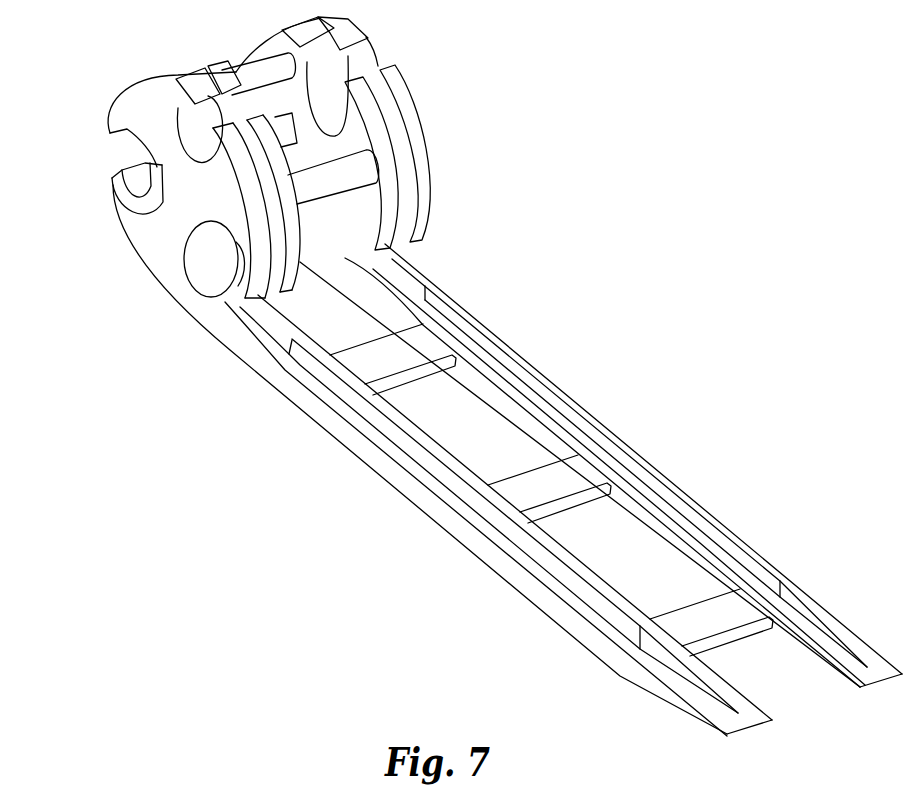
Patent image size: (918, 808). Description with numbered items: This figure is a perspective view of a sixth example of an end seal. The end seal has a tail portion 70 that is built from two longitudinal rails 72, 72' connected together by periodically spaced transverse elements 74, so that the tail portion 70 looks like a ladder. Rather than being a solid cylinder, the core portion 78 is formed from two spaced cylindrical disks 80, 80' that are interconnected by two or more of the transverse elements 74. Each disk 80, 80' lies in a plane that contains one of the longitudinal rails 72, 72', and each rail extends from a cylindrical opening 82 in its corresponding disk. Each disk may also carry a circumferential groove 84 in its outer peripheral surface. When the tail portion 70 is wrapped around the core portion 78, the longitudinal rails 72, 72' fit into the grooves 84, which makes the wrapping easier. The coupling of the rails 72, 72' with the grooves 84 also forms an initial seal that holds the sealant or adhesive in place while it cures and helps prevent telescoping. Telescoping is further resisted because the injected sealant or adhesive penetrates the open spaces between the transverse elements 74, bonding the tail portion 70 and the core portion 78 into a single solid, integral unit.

The tail portion 70 is at (386, 547).
The longitudinal rail 72 is at (442, 460).
The longitudinal rail 72' is at (601, 465).
The transverse element 74 is at (413, 370).
The core portion 78 is at (90, 316).
The cylindrical disk 80 is at (235, 157).
The cylindrical disk 80' is at (411, 152).
The cylindrical opening 82 is at (205, 265).
The circumferential groove 84 is at (190, 74).